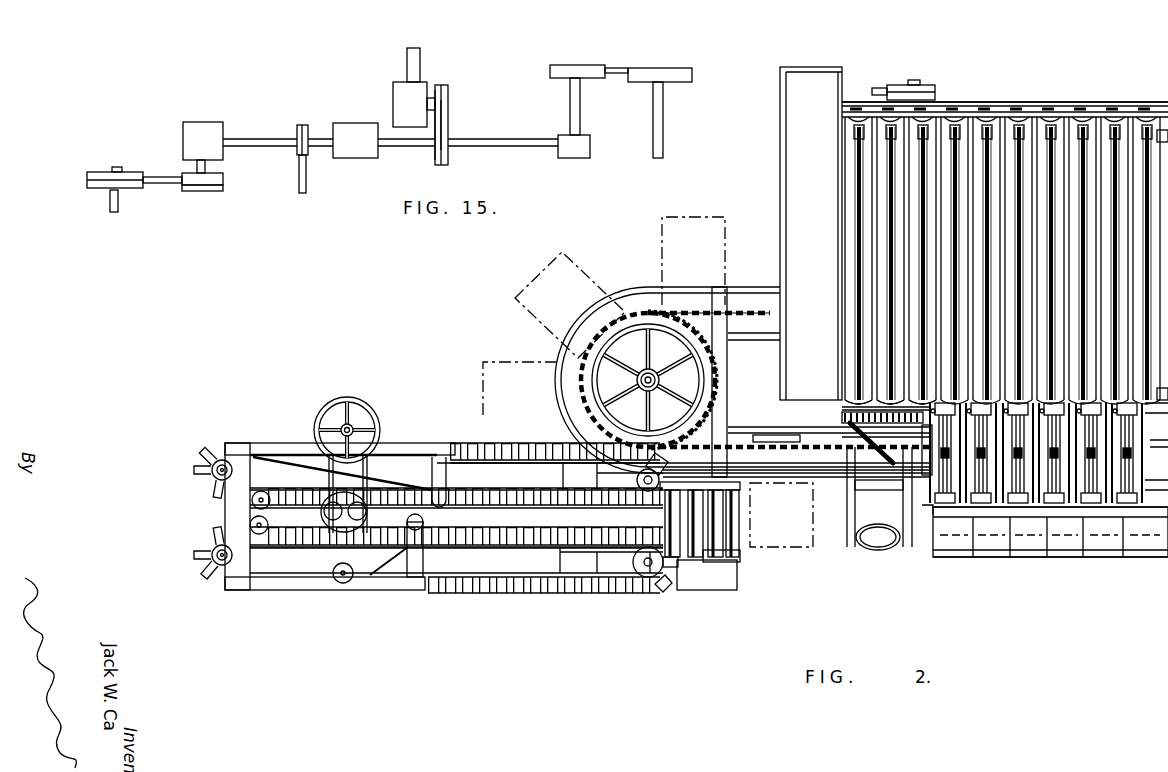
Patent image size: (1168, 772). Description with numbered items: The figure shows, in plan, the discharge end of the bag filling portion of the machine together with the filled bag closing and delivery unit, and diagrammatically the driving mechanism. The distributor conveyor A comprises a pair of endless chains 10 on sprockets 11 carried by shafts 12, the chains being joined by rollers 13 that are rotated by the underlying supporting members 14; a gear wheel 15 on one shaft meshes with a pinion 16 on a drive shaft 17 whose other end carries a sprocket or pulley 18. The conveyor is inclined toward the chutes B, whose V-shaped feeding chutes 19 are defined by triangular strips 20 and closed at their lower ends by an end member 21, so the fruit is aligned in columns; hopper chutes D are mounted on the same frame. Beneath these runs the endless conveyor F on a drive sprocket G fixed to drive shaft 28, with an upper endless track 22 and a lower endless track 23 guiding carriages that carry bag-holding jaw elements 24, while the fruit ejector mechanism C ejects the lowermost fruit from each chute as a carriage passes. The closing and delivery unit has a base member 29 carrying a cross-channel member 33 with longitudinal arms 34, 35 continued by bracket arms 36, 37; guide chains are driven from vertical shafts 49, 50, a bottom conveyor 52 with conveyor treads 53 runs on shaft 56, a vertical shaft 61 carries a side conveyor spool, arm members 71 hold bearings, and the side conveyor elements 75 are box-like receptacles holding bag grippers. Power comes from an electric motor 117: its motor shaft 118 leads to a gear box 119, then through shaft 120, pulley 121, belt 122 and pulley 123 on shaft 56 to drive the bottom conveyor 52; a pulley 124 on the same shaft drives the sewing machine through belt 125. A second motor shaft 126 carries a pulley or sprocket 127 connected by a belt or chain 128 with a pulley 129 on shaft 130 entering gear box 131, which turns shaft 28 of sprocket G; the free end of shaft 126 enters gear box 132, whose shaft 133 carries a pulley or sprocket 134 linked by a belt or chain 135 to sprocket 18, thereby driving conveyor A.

In FIG. 2, the endless chains 10 is at (1005, 242).
In FIG. 2, the sprockets 11 is at (838, 403).
In FIG. 2, the shafts 12 is at (840, 419).
In FIG. 2, the rollers 13 is at (948, 107).
In FIG. 2, the supporting members 14 is at (1070, 99).
In FIG. 2, the gear wheel 15 is at (843, 454).
In FIG. 2, the pinion 16 is at (918, 404).
In FIG. 15, the drive shaft 17 is at (659, 115).
In FIG. 2, the drive shaft 17 is at (923, 84).
In FIG. 15, the sprocket or pulley 18 is at (677, 83).
In FIG. 2, the sprocket or pulley 18 is at (891, 86).
In FIG. 2, the feeding chutes 19 is at (1005, 500).
In FIG. 2, the triangular strips 20 is at (1065, 500).
In FIG. 2, the end member 21 is at (1164, 525).
In FIG. 2, the upper endless track 22 is at (644, 288).
In FIG. 2, the lower endless track 23 is at (749, 414).
In FIG. 2, the bag-holding jaw elements 24 is at (872, 555).
In FIG. 15, the drive shaft 28 is at (412, 65).
In FIG. 2, the drive shaft 28 is at (665, 380).
In FIG. 2, the base member 29 is at (715, 583).
In FIG. 2, the cross-channel member 33 is at (242, 513).
In FIG. 2, the arm 34 is at (390, 580).
In FIG. 2, the arm 35 is at (400, 452).
In FIG. 2, the bracket arm 36 is at (425, 580).
In FIG. 2, the bracket arm 37 is at (462, 444).
In FIG. 2, the vertical shaft 49 is at (207, 543).
In FIG. 2, the vertical shaft 50 is at (210, 468).
In FIG. 2, the bottom conveyor 52 is at (740, 546).
In FIG. 2, the conveyor treads 53 is at (737, 510).
In FIG. 15, the shaft 56 is at (110, 201).
In FIG. 2, the vertical shaft 61 is at (650, 596).
In FIG. 2, the arm members 71 is at (571, 475).
In FIG. 2, the conveyor elements 75 is at (497, 597).
In FIG. 15, the electric motor 117 is at (348, 154).
In FIG. 15, the motor shaft 118 is at (273, 142).
In FIG. 15, the gear box 119 is at (213, 130).
In FIG. 15, the shaft 120 is at (206, 168).
In FIG. 15, the pulley 121 is at (215, 191).
In FIG. 15, the belt 122 is at (168, 185).
In FIG. 15, the pulley 123 is at (130, 169).
In FIG. 15, the pulley 124 is at (308, 136).
In FIG. 15, the belt 125 is at (306, 170).
In FIG. 15, the second motor shaft 126 is at (399, 150).
In FIG. 15, the pulley or sprocket 127 is at (449, 128).
In FIG. 15, the belt or chain 128 is at (449, 118).
In FIG. 15, the pulley 129 is at (449, 106).
In FIG. 15, the shaft 130 is at (431, 102).
In FIG. 15, the gear box 131 is at (404, 101).
In FIG. 15, the gear box 132 is at (585, 147).
In FIG. 15, the shaft 133 is at (580, 107).
In FIG. 15, the pulley or sprocket 134 is at (589, 79).
In FIG. 15, the belt or chain 135 is at (639, 70).
In FIG. 2, the conveyor A is at (988, 103).
In FIG. 2, the chutes B is at (1130, 449).
In FIG. 2, the fruit ejector mechanism C is at (1118, 503).
In FIG. 2, the hopper chutes D is at (1125, 553).
In FIG. 2, the endless conveyor F is at (753, 320).
In FIG. 2, the drive sprocket G is at (714, 386).